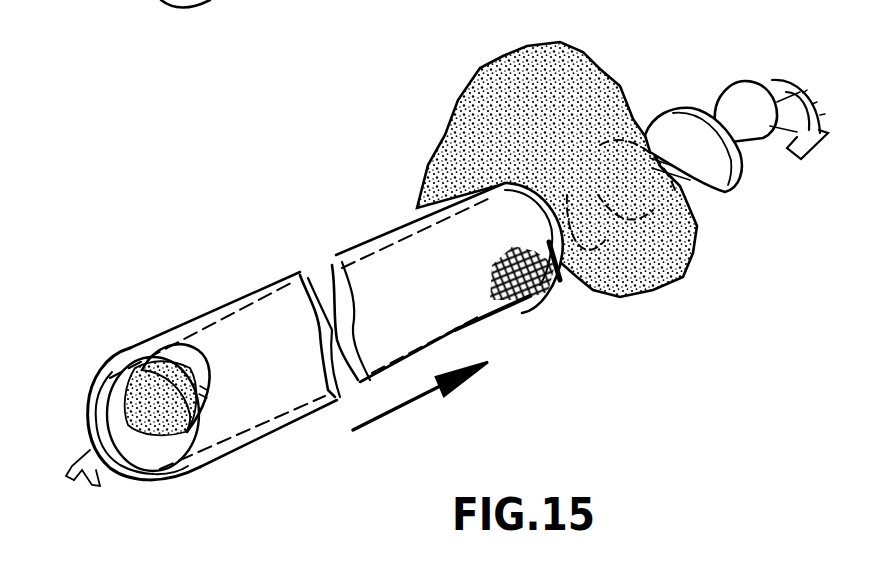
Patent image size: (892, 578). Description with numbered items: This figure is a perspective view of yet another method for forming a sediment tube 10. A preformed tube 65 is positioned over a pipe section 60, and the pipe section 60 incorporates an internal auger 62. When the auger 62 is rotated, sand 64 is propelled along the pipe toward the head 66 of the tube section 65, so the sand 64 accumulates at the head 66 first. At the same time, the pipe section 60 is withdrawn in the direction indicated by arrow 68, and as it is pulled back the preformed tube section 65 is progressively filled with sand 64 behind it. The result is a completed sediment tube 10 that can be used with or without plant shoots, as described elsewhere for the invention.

The sediment tube 10 is at (381, 158).
The pipe section 60 is at (585, 305).
The internal auger 62 is at (735, 80).
The sand 64 is at (605, 75).
The preformed tube 65 is at (248, 291).
The head 66 is at (148, 486).
The arrow 68 is at (420, 402).